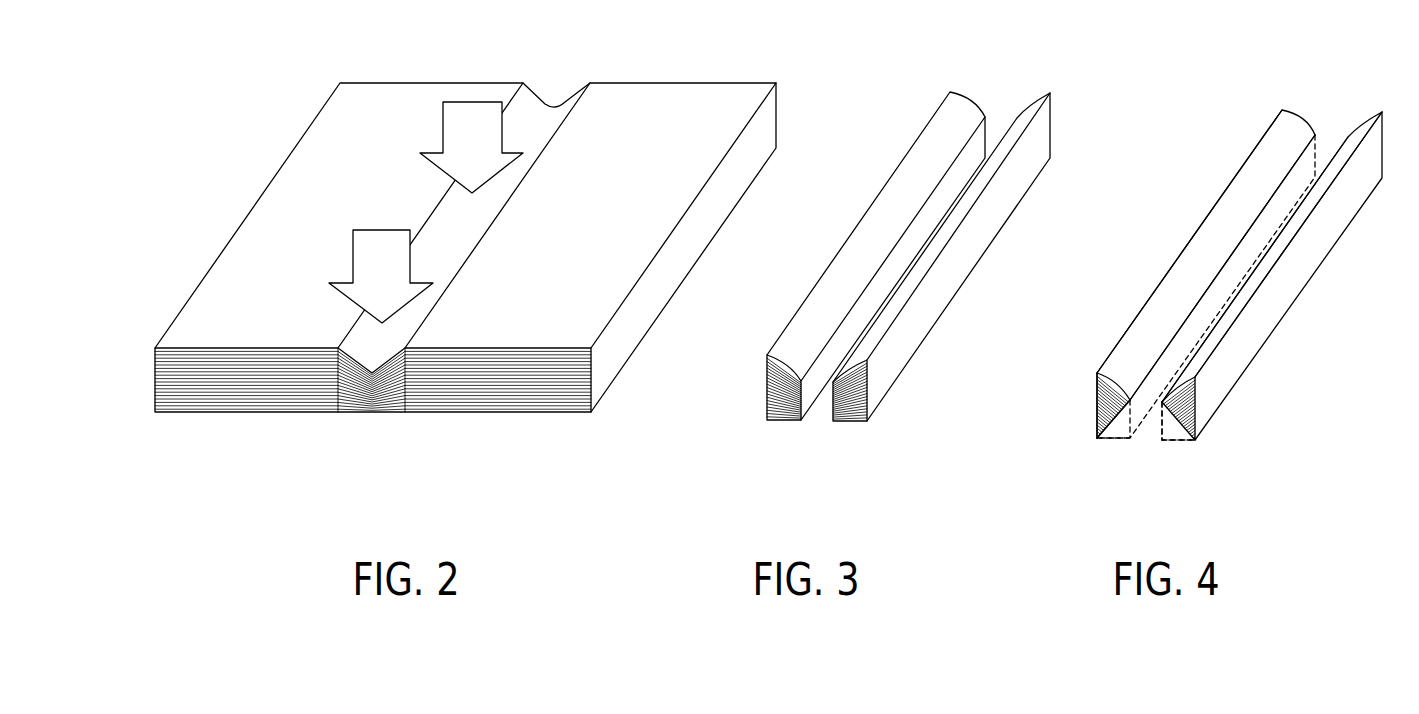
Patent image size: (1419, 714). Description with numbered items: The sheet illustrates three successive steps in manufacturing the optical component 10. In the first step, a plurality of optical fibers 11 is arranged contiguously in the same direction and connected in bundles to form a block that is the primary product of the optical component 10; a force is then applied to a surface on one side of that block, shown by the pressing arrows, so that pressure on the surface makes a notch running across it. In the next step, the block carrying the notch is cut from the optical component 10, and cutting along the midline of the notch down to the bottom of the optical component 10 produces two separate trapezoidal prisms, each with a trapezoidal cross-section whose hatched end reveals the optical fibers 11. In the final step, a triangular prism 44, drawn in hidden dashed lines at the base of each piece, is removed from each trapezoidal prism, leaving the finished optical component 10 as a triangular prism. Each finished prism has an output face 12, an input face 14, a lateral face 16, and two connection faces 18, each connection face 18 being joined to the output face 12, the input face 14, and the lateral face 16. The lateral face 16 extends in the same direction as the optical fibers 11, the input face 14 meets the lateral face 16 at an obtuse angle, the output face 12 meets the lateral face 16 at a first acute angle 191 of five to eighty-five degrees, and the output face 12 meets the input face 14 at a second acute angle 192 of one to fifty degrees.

In FIG. 2, the optical component 10 is at (705, 47).
In FIG. 3, the optical component 10 is at (1041, 47).
In FIG. 4, the optical component 10 is at (1360, 47).
In FIG. 2, the optical fibers 11 is at (270, 382).
In FIG. 3, the optical fibers 11 is at (777, 398).
In FIG. 4, the output face 12 is at (1097, 377).
In FIG. 4, the input face 14 is at (1107, 432).
In FIG. 4, the lateral face 16 is at (1130, 368).
In FIG. 4, the connection faces 18 is at (1112, 405).
In FIG. 4, the triangular prism 44 is at (1119, 444).
In FIG. 4, the first acute angle 191 is at (1198, 388).
In FIG. 4, the second acute angle 192 is at (1203, 430).